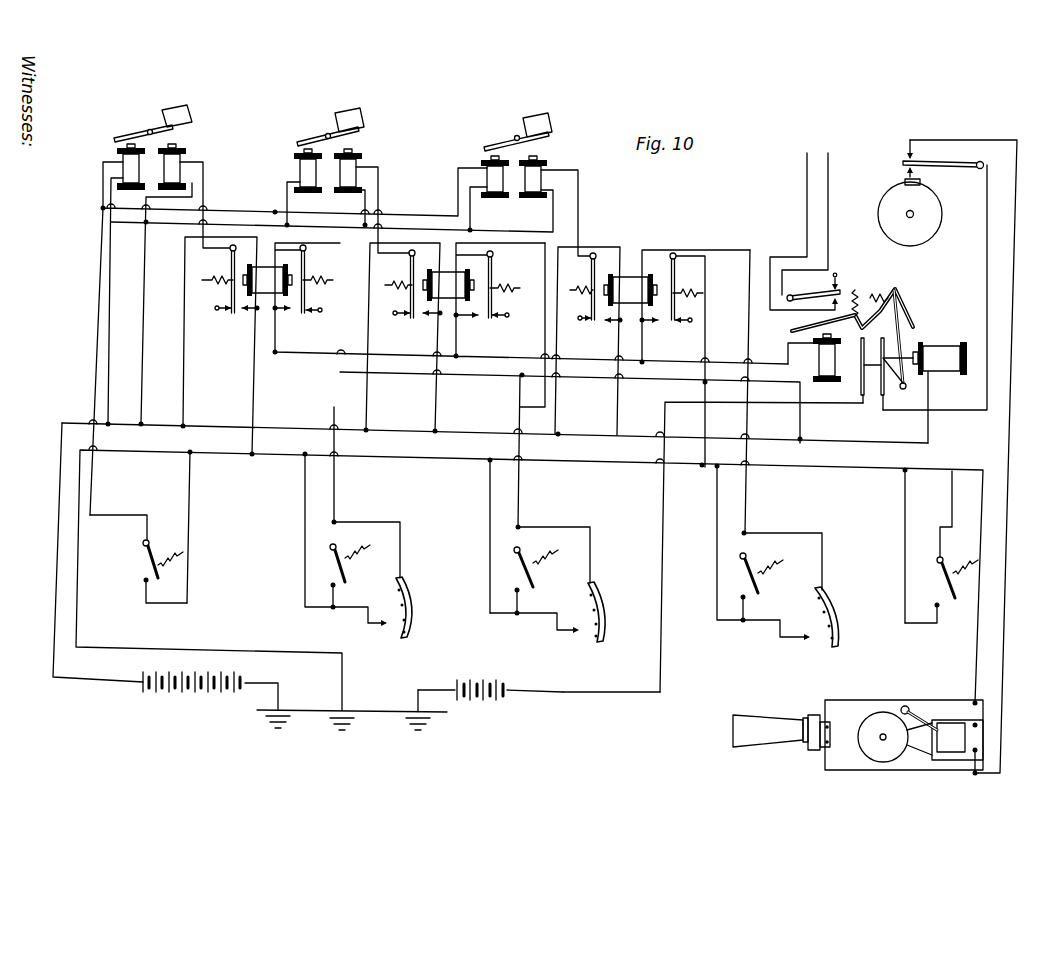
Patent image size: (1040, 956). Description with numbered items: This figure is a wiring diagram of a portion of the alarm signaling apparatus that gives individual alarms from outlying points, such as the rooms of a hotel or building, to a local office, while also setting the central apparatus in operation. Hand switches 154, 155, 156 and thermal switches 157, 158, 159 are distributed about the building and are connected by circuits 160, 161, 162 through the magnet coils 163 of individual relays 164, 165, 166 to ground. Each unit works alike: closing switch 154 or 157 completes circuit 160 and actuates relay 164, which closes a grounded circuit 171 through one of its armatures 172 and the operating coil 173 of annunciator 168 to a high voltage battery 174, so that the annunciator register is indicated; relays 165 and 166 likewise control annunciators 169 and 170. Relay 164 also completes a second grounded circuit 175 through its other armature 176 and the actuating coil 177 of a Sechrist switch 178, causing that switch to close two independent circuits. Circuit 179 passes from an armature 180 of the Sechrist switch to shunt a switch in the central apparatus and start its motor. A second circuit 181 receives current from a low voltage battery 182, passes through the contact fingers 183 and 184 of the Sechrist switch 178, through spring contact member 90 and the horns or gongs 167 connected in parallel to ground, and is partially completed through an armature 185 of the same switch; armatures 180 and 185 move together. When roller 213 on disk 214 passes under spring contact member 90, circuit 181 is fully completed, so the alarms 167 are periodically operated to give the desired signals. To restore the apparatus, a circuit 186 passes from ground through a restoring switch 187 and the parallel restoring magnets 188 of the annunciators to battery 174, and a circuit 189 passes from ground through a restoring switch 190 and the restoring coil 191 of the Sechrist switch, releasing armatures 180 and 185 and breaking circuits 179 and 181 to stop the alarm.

The spring contact member 90 is at (922, 163).
The hand switch 154 is at (330, 567).
The hand switch 155 is at (520, 567).
The hand switch 156 is at (743, 568).
The thermal switch 157 is at (412, 621).
The thermal switch 158 is at (605, 622).
The thermal switch 159 is at (836, 614).
The circuit 160 is at (185, 400).
The circuit 161 is at (364, 405).
The circuit 162 is at (748, 318).
The magnet coil 163 is at (270, 277).
The relay 164 is at (268, 297).
The relay 165 is at (448, 303).
The relay 166 is at (630, 313).
The local alarm 167 is at (776, 735).
The annunciator 168 is at (150, 170).
The annunciator 169 is at (328, 170).
The annunciator 170 is at (513, 178).
The grounded circuit 171 is at (205, 191).
The armature 172 is at (231, 262).
The operating coil 173 is at (173, 171).
The high voltage battery 174 is at (195, 691).
The grounded circuit 175 is at (327, 316).
The armature 176 is at (305, 262).
The actuating coil 177 is at (788, 351).
The Sechrist switch 178 is at (897, 350).
The circuit 179 is at (828, 148).
The armature 180 is at (826, 293).
The circuit 181 is at (563, 692).
The low voltage battery 182 is at (484, 700).
The contact finger 183 is at (860, 366).
The contact finger 184 is at (884, 362).
The armature 185 is at (868, 300).
The circuit 186 is at (243, 202).
The restoring switch 187 is at (140, 562).
The restoring magnet 188 is at (103, 163).
The circuit 189 is at (905, 515).
The restoring switch 190 is at (940, 573).
The restoring coil 191 is at (946, 346).
The roller 213 is at (921, 183).
The disk 214 is at (896, 200).